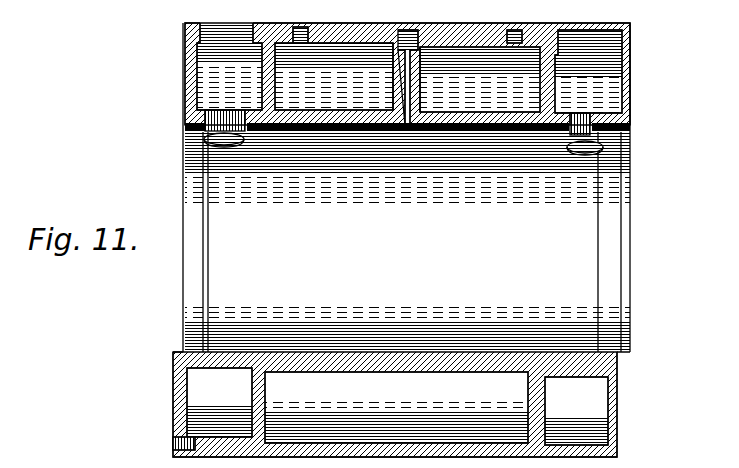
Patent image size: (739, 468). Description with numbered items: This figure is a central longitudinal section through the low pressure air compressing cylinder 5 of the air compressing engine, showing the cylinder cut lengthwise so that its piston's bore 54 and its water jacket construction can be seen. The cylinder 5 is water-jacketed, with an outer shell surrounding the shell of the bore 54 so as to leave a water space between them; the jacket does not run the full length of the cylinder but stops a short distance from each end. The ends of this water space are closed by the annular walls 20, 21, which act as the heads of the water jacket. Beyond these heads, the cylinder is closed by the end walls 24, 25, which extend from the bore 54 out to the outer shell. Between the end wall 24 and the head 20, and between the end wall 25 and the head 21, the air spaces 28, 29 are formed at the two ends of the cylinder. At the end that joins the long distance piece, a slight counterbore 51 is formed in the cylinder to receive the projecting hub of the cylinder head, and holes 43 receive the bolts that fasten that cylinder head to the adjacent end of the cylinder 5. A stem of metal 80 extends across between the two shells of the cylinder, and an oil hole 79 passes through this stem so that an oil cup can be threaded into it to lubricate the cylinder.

The low pressure air compressing cylinder 5 is at (401, 365).
The annular wall 20 is at (334, 76).
The annular wall 21 is at (480, 79).
The end wall 24 is at (185, 77).
The end wall 25 is at (630, 84).
The air space 28 is at (210, 88).
The air space 29 is at (600, 99).
The holes 43 is at (175, 442).
The counterbore 51 is at (195, 268).
The cylinder bore 54 is at (407, 242).
The oil hole 79 is at (392, 78).
The stem of metal 80 is at (430, 63).